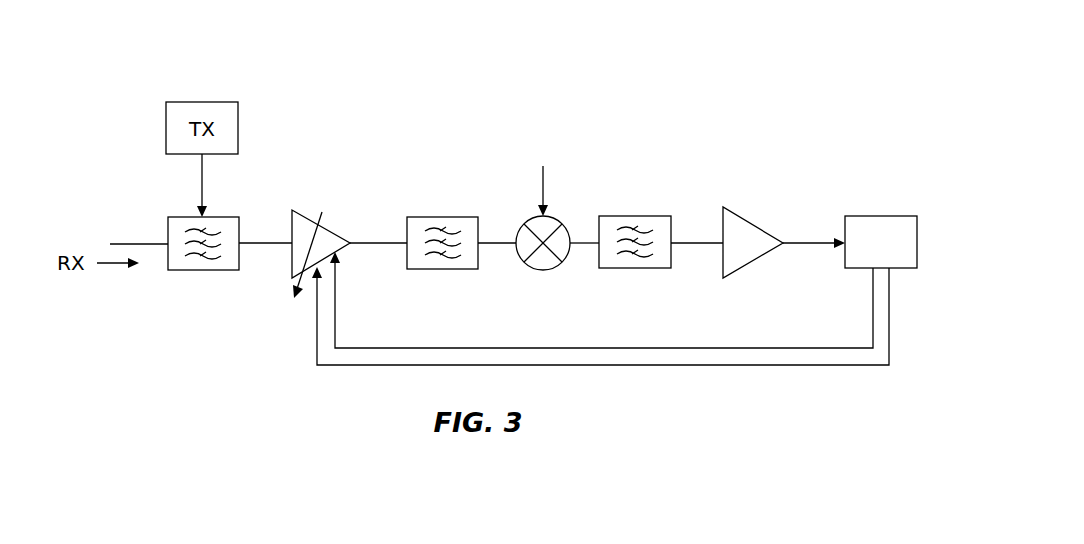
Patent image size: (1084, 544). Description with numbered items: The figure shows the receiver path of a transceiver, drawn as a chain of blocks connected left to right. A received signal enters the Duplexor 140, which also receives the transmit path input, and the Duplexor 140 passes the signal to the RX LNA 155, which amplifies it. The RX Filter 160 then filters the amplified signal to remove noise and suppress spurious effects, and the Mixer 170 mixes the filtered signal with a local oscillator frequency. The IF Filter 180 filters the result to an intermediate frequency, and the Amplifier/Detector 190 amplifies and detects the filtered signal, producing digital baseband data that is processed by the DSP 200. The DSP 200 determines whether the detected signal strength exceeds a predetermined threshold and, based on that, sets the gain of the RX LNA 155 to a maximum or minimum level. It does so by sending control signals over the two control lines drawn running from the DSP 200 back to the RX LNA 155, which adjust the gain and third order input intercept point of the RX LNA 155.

The duplexor 140 is at (186, 216).
The RX LNA 155 is at (342, 251).
The RX filter 160 is at (433, 270).
The mixer 170 is at (555, 269).
The IF filter 180 is at (627, 268).
The amplifier/detector 190 is at (763, 255).
The DSP 200 is at (897, 268).